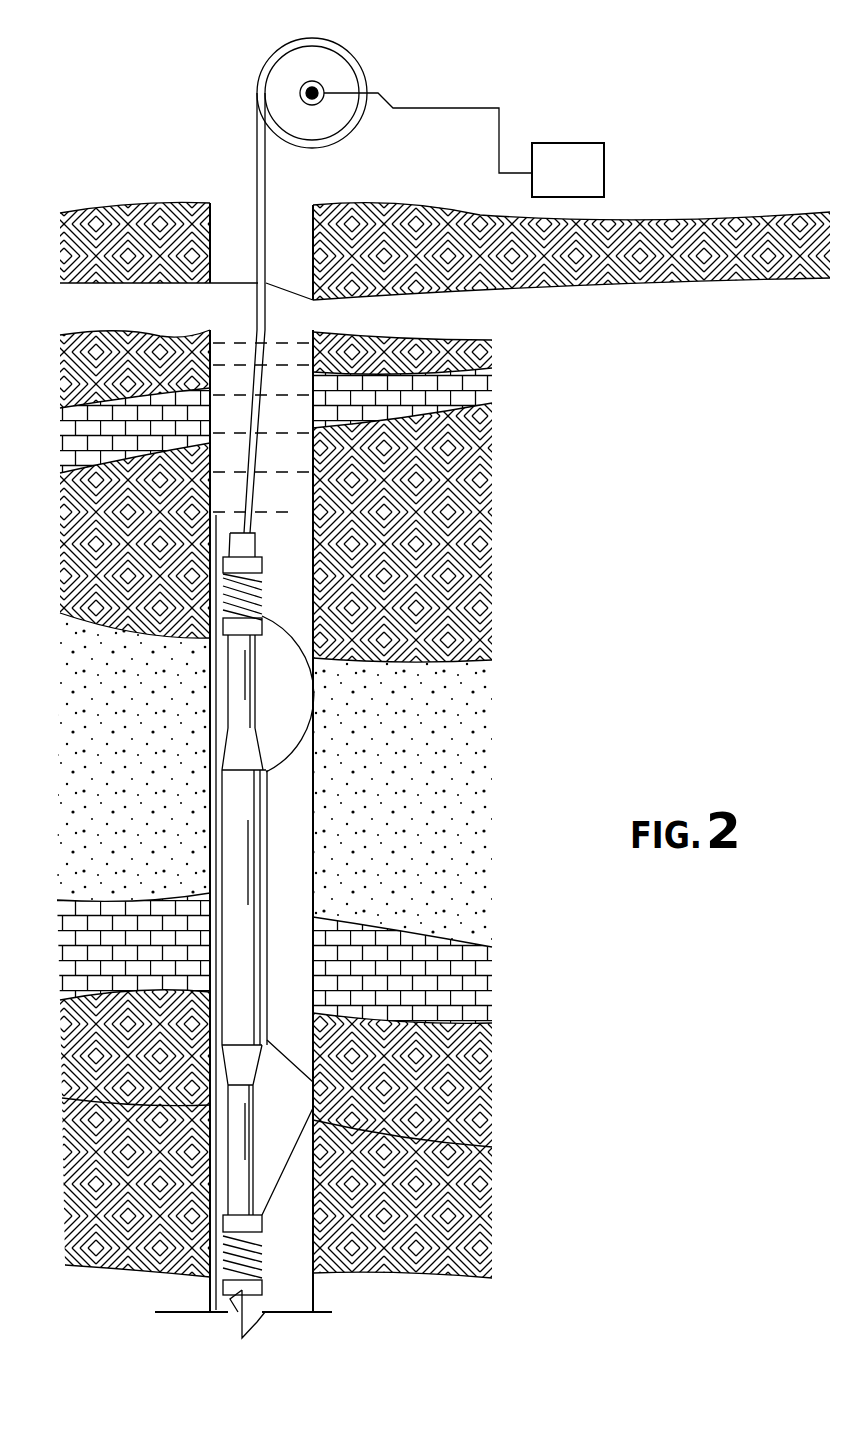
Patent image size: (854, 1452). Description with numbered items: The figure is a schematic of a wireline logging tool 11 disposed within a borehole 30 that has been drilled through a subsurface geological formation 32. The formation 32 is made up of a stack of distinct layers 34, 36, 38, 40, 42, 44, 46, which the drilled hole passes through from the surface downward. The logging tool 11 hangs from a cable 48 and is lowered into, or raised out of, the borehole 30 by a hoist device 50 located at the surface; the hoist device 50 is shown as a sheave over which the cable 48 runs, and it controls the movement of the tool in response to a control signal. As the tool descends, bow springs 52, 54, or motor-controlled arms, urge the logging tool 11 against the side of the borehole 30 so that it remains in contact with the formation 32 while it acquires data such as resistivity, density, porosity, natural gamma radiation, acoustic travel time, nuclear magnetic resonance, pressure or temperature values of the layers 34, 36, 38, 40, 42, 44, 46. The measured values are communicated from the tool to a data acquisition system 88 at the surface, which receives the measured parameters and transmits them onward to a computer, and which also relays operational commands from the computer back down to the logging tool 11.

The well logging tool 11 is at (265, 858).
The borehole 30 is at (302, 272).
The geological formation 32 is at (518, 652).
The layer 34 is at (480, 350).
The layer 36 is at (490, 397).
The layer 38 is at (485, 537).
The layer 40 is at (498, 776).
The layer 42 is at (495, 994).
The layer 44 is at (480, 1092).
The layer 46 is at (480, 1212).
The cable 48 is at (257, 173).
The hoist device 50 is at (330, 62).
The bow spring 52 is at (300, 738).
The bow spring 54 is at (293, 1150).
The data acquisition system 88 is at (572, 143).